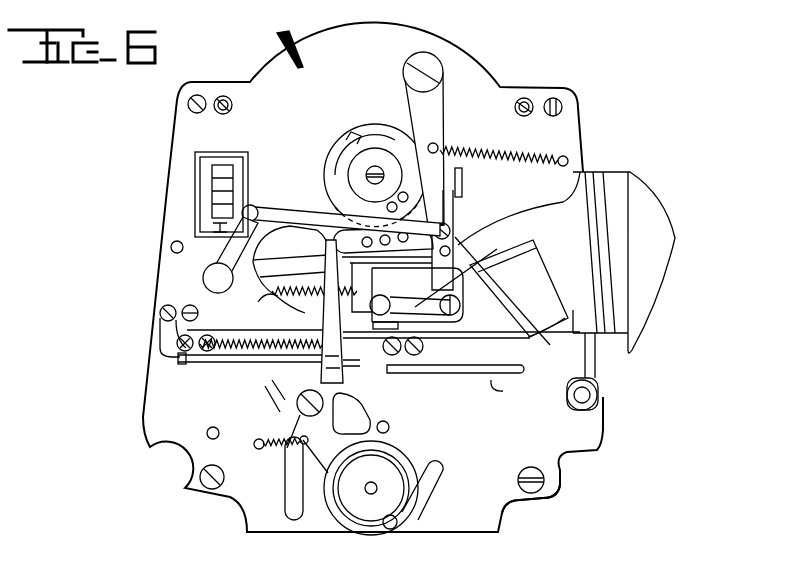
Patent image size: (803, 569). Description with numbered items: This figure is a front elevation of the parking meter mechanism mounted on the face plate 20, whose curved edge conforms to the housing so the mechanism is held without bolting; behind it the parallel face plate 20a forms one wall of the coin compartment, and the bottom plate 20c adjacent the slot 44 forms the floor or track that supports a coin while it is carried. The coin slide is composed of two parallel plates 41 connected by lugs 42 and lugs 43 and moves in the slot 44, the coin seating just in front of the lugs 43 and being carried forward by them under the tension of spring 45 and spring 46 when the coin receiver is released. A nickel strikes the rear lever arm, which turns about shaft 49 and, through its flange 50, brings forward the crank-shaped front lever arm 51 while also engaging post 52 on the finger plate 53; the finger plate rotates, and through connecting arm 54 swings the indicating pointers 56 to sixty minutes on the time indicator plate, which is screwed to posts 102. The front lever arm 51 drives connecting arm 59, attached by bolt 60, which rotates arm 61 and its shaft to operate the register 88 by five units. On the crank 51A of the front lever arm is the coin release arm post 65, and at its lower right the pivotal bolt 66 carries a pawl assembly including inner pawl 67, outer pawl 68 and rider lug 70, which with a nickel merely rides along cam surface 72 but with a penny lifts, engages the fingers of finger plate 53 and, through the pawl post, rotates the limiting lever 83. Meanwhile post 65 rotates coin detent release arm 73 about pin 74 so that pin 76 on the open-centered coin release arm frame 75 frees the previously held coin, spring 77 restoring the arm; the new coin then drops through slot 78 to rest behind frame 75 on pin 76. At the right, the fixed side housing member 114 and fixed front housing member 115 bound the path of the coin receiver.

The face plate 20 is at (205, 448).
The face plate 20a is at (535, 433).
The bottom plate 20c is at (512, 391).
The posts 102 is at (213, 113).
The finger plate 53 is at (410, 177).
The connecting arm 54 is at (337, 146).
The shaft 49 is at (427, 62).
The indicating pointers 56 is at (303, 50).
The post 52 is at (427, 217).
The flange 50 is at (463, 182).
The front lever arm 51 is at (442, 220).
The crank 51A is at (410, 292).
The coin release arm post 65 is at (415, 300).
The bolt 60 is at (435, 232).
The outer pawl 68 is at (428, 314).
The pivotal bolt 66 is at (460, 305).
The inner pawl 67 is at (385, 330).
The connecting arm 59 is at (280, 220).
The arm 61 is at (228, 250).
The register 88 is at (227, 165).
The limiting lever 83 is at (287, 270).
The spring 45 is at (277, 287).
The cam surface 72 is at (278, 302).
The parallel plates 41 is at (278, 352).
The spring 46 is at (238, 350).
The lugs 42 is at (205, 353).
The coin detent release arm 73 is at (323, 325).
The lugs 43 is at (413, 355).
The slot 44 is at (453, 347).
The pin 74 is at (297, 403).
The spring 77 is at (283, 443).
The slot 78 is at (343, 407).
The rider lug 70 is at (392, 334).
The coin release arm frame 75 is at (412, 480).
The detent pin 76 is at (392, 529).
The fixed side housing member 114 is at (603, 323).
The fixed front housing member 115 is at (640, 250).